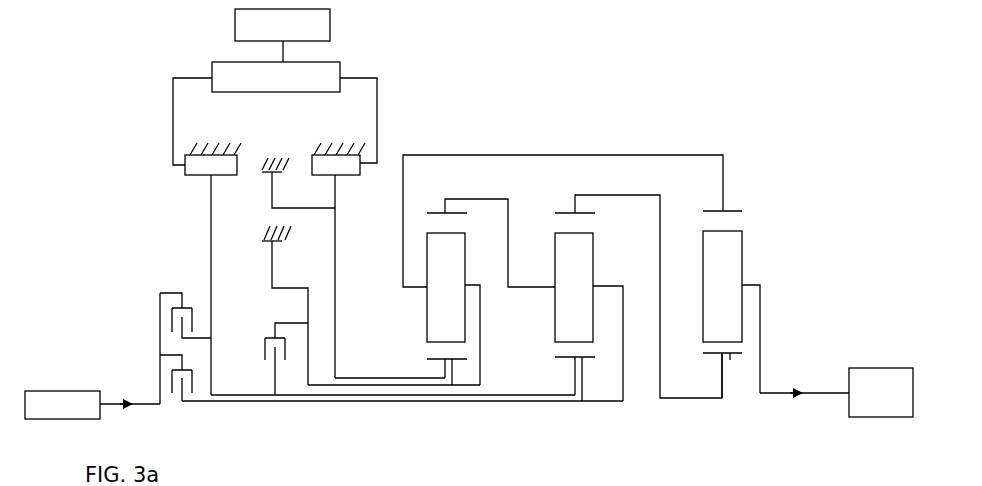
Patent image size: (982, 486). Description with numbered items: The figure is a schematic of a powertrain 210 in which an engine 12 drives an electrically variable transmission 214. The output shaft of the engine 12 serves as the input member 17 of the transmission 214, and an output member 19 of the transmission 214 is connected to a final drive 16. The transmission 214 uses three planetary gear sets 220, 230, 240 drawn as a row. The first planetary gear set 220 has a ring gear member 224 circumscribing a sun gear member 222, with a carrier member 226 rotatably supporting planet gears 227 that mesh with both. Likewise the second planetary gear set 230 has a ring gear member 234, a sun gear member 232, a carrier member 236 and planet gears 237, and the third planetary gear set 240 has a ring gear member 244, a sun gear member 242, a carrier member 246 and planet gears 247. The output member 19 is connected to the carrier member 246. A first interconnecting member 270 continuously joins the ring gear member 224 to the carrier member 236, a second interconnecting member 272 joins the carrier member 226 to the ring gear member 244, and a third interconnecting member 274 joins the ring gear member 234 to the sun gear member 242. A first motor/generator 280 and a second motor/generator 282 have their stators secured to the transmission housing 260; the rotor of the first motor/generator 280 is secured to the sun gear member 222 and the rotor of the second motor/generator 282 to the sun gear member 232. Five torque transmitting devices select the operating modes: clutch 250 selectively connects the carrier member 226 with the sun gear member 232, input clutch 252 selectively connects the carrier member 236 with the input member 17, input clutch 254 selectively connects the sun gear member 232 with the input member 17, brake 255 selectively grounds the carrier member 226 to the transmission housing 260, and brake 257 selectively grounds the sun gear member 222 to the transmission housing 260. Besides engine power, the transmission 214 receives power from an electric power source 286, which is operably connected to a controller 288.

The engine 12 is at (57, 391).
The final drive 16 is at (870, 367).
The input member 17 is at (108, 402).
The output member 19 is at (780, 397).
The powertrain 210 is at (85, 175).
The electrically variable transmission 214 is at (88, 228).
The first planetary gear set 220 is at (443, 362).
The sun gear member 222 is at (452, 362).
The ring gear member 224 is at (429, 211).
The carrier member 226 is at (470, 283).
The planet gears 227 is at (446, 287).
The second planetary gear set 230 is at (572, 360).
The sun gear member 232 is at (580, 360).
The ring gear member 234 is at (557, 211).
The carrier member 236 is at (600, 283).
The planet gears 237 is at (574, 287).
The third planetary gear set 240 is at (720, 357).
The sun gear member 242 is at (731, 356).
The ring gear member 244 is at (705, 209).
The carrier member 246 is at (747, 283).
The planet gears 247 is at (722, 286).
The clutch 250 is at (272, 358).
The input clutch 252 is at (178, 396).
The input clutch 254 is at (177, 328).
The brake 255 is at (284, 242).
The brake 257 is at (273, 175).
The transmission housing 260 is at (193, 143).
The first interconnecting member 270 is at (482, 198).
The second interconnecting member 272 is at (452, 153).
The third interconnecting member 274 is at (583, 194).
The first motor/generator 280 is at (362, 177).
The second motor/generator 282 is at (190, 178).
The electric power source 286 is at (330, 24).
The controller 288 is at (340, 73).